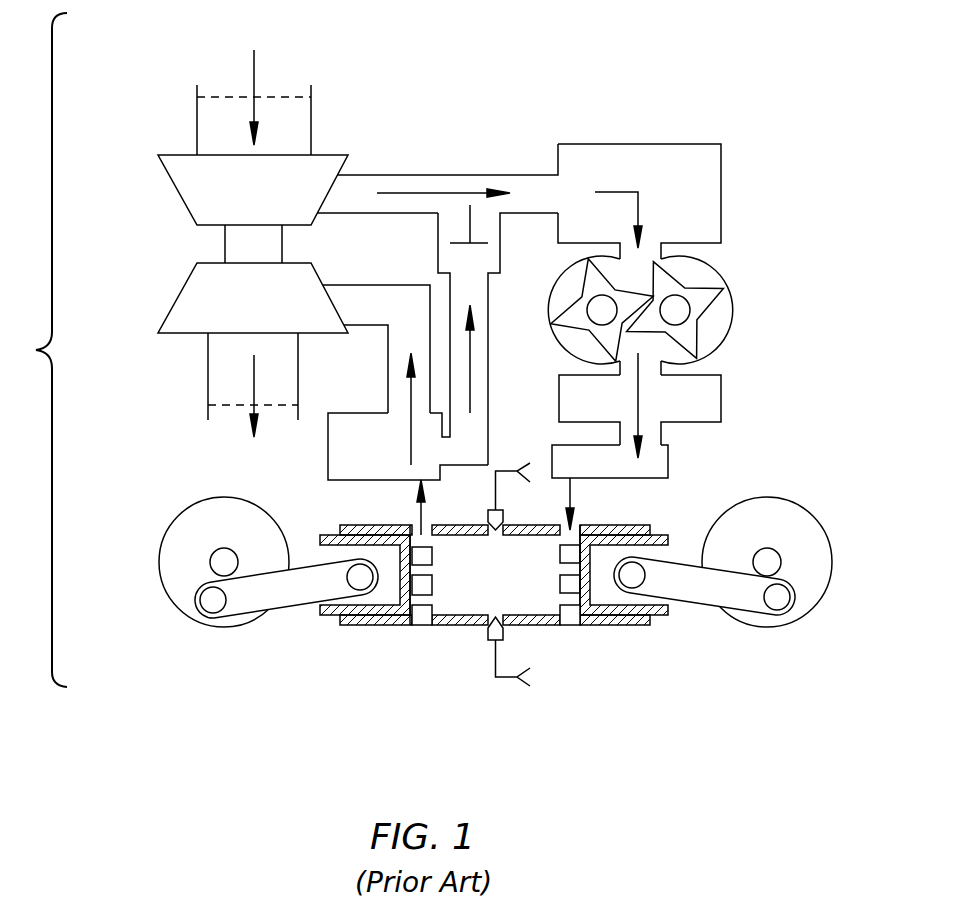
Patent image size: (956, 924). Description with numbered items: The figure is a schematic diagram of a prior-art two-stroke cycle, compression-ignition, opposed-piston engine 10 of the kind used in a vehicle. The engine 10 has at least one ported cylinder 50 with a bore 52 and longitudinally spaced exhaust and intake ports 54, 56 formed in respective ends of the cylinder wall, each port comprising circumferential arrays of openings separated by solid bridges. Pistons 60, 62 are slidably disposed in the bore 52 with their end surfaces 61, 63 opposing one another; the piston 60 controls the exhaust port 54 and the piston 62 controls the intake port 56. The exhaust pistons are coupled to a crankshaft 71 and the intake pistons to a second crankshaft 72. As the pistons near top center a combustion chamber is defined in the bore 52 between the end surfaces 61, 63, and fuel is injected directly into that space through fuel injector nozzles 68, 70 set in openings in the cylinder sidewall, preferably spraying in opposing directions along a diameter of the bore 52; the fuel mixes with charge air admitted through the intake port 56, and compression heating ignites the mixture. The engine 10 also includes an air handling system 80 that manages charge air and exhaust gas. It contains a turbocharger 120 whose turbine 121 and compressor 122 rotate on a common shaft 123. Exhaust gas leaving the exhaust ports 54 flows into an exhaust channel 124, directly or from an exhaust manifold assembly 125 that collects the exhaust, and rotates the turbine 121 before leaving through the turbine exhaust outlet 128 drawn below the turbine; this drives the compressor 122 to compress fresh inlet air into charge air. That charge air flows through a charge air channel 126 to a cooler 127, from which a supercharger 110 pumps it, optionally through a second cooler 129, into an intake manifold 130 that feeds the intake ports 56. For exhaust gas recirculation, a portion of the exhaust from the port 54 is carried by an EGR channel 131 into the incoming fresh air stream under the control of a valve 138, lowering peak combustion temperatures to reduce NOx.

The opposed-piston engine 10 is at (38, 350).
The ported cylinder 50 is at (447, 690).
The bore 52 is at (507, 587).
The exhaust port 54 is at (422, 627).
The intake port 56 is at (570, 627).
The exhaust piston 60 is at (322, 614).
The end surface 61 is at (417, 557).
The intake piston 62 is at (660, 533).
The end surface 63 is at (578, 558).
The fuel injector nozzle 68 is at (505, 517).
The fuel injector nozzle 70 is at (487, 633).
The crankshaft 71 is at (172, 525).
The crankshaft 72 is at (797, 503).
The air handling system 80 is at (550, 70).
The supercharger 110 is at (715, 265).
The turbocharger 120 is at (152, 247).
The turbine 121 is at (173, 305).
The compressor 122 is at (174, 187).
The common shaft 123 is at (282, 243).
The exhaust channel 124 is at (388, 337).
The exhaust manifold assembly 125 is at (328, 472).
The charge air channel 126 is at (425, 175).
The cooler 127 is at (721, 206).
The turbine exhaust outlet 128 is at (207, 390).
The second cooler 129 is at (721, 393).
The intake manifold 130 is at (668, 465).
The EGR channel 131 is at (512, 335).
The valve 138 is at (467, 222).